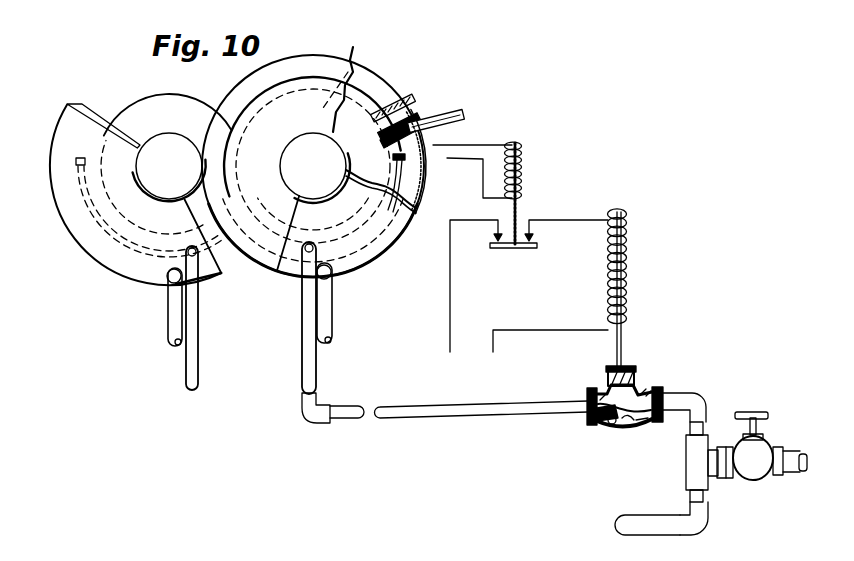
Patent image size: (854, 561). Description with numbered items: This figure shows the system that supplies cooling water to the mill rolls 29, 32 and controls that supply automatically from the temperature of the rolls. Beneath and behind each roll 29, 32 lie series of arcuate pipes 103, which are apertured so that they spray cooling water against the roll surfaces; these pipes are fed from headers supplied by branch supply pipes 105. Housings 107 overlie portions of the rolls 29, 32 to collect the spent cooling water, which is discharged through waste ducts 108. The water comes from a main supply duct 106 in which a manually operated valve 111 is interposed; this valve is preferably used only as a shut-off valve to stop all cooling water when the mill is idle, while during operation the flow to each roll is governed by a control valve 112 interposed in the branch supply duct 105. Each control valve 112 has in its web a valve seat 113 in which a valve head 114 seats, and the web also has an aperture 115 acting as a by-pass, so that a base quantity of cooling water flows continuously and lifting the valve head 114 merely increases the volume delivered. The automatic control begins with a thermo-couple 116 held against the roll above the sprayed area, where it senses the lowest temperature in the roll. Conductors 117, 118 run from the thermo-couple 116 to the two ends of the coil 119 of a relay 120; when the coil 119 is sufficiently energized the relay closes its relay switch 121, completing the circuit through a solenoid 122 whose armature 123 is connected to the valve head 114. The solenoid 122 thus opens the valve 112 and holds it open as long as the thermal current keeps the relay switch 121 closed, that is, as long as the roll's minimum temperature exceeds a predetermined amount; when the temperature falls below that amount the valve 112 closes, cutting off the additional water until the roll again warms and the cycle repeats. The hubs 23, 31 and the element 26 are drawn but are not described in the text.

The hub of first disc 23 is at (172, 145).
The second disc 26 is at (312, 72).
The roll 29 is at (133, 118).
The hub of second disc 31 is at (300, 146).
The roll 32 is at (353, 60).
The arcuate pipes 103 is at (110, 238).
The supply pipes 105 is at (192, 373).
The main supply duct 106 is at (788, 457).
The housings 107 is at (80, 230).
The waste ducts 108 is at (173, 324).
The manually operated valve 111 is at (757, 476).
The control valve 112 is at (642, 432).
The valve seat 113 is at (625, 432).
The valve head 114 is at (637, 387).
The aperture 115 is at (612, 427).
The thermo-couple 116 is at (415, 103).
The conductor 117 is at (478, 143).
The conductor 118 is at (458, 160).
The coil 119 is at (522, 157).
The relay 120 is at (522, 206).
The relay switch 121 is at (522, 249).
The solenoid 122 is at (628, 244).
The armature 123 is at (622, 342).